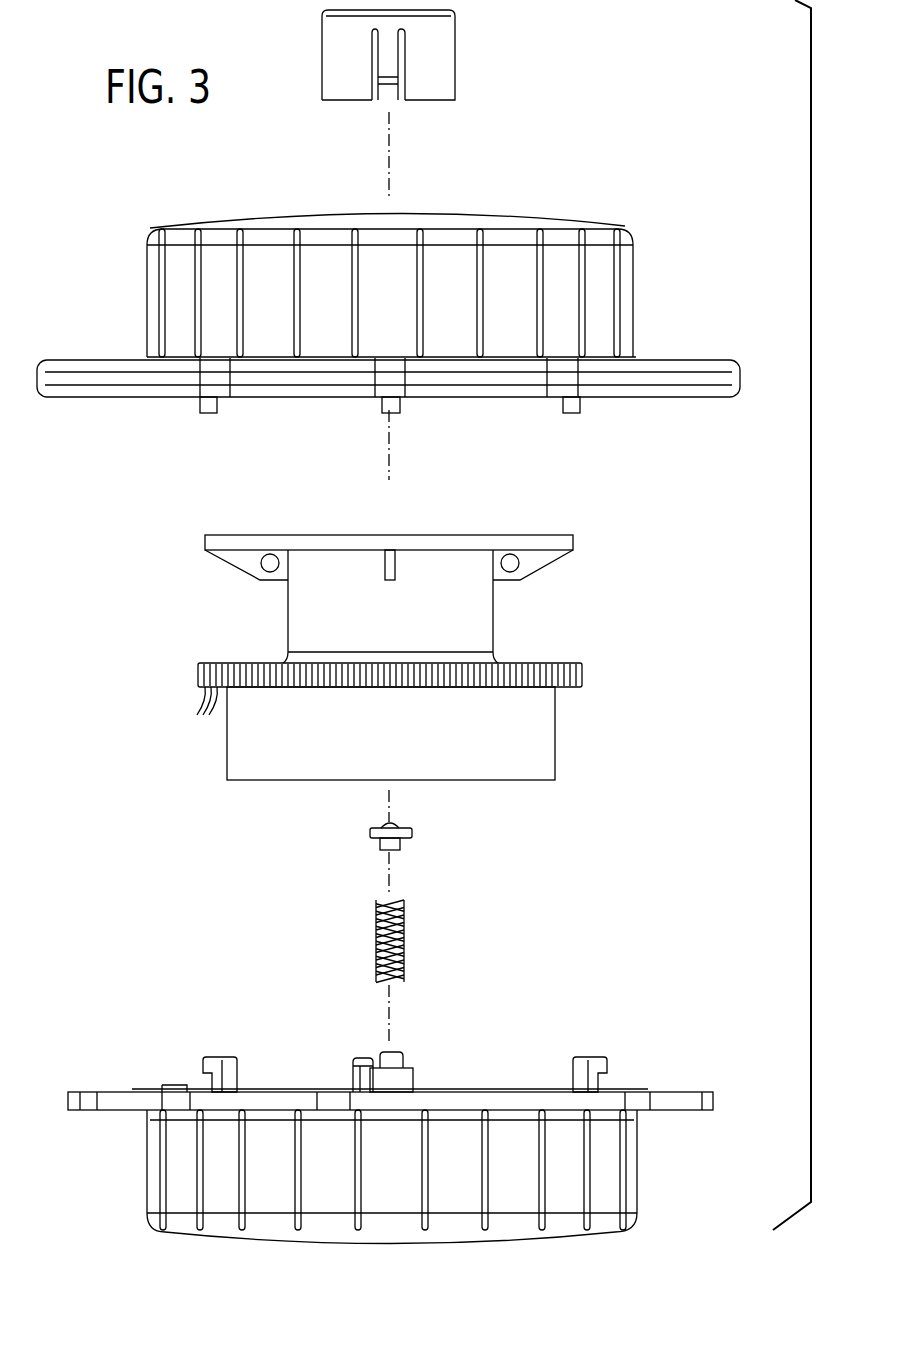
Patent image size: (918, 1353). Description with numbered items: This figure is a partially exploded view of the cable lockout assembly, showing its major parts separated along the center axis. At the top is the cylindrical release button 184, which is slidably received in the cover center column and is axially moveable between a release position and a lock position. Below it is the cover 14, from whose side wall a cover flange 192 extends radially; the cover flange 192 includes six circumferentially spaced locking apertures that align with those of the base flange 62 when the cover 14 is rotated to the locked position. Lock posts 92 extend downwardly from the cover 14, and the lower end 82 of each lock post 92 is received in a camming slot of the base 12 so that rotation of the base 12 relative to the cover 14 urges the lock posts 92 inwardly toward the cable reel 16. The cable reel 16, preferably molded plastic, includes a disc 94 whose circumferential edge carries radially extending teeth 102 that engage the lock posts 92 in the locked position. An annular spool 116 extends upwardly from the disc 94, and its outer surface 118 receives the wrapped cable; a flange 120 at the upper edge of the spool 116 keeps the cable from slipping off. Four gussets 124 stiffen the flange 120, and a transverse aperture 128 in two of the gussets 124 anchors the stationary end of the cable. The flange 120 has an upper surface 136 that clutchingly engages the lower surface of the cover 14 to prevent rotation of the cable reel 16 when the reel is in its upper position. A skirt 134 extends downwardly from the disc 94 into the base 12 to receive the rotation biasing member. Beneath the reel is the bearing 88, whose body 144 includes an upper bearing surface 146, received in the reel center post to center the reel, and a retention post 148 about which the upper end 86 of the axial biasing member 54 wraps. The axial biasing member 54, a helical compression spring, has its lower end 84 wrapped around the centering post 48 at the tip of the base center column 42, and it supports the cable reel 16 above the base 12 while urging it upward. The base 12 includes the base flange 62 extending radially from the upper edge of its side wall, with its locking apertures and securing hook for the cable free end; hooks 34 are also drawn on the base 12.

The release button 184 is at (562, 35).
The cover 14 is at (408, 324).
The cover flange 192 is at (706, 358).
The lock post 92 is at (562, 405).
The lower end of lock post 82 is at (419, 435).
The flange upper surface 136 is at (232, 528).
The flange 120 is at (575, 540).
The gussets 124 is at (552, 560).
The transverse aperture 128 is at (519, 570).
The spool outer surface 118 is at (368, 630).
The annular spool 116 is at (495, 642).
The disc 94 is at (584, 668).
The cable reel 16 is at (459, 629).
The teeth 102 is at (206, 713).
The skirt 134 is at (556, 735).
The upper bearing surface 146 is at (400, 828).
The bearing body 144 is at (393, 846).
The axial biasing member retention post 148 is at (395, 850).
The upper end of axial biasing member 86 is at (376, 902).
The axial biasing member 54 is at (404, 935).
The lower end of axial biasing member 84 is at (378, 982).
The bearing 88 is at (450, 910).
The hooks 34 is at (590, 1058).
The centering post 48 is at (392, 1052).
The base center column 42 is at (413, 1078).
The base flange 62 is at (713, 1093).
The base 12 is at (434, 1132).